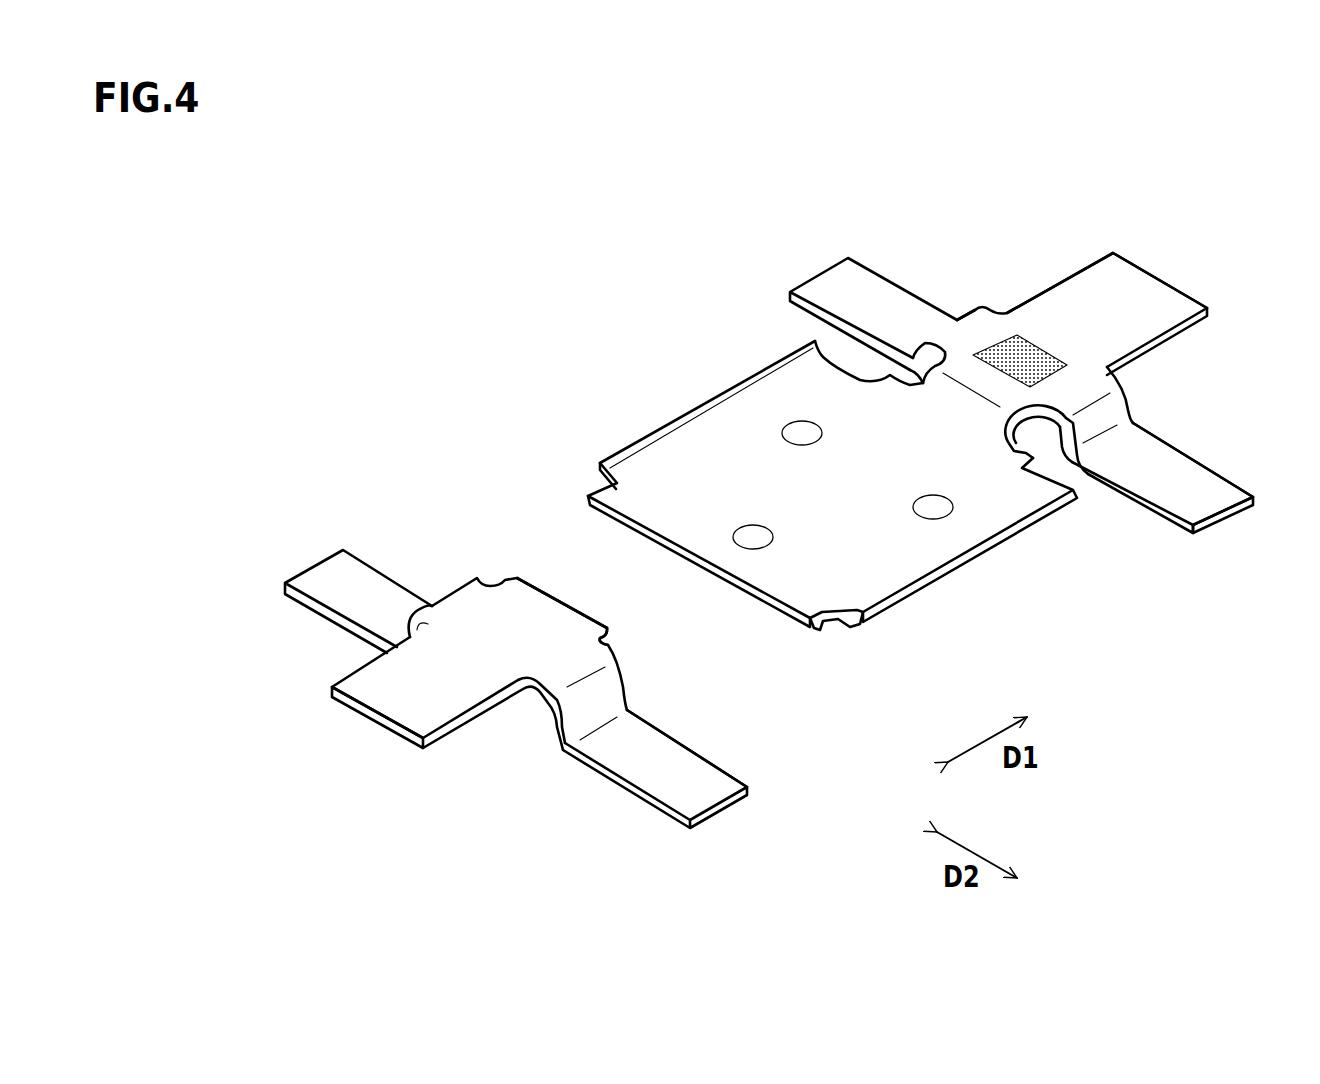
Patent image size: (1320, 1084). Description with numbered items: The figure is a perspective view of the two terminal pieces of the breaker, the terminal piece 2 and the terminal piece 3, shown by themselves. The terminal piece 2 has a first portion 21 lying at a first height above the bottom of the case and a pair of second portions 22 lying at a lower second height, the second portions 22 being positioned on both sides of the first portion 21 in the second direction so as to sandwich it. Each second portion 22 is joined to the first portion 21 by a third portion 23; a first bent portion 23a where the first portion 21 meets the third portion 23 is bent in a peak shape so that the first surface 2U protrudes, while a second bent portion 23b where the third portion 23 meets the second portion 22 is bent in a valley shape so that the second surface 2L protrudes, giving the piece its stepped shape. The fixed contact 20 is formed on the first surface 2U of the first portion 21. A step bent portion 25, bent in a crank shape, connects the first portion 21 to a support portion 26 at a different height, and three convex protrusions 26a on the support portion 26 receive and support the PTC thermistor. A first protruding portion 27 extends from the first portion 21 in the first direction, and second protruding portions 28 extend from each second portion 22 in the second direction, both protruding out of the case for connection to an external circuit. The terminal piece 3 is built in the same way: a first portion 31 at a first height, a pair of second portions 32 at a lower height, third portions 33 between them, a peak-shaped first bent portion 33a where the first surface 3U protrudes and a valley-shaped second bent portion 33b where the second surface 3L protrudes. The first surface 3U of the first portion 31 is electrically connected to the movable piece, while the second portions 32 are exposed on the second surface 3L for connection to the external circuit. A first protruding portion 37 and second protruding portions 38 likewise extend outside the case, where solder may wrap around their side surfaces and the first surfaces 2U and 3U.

The terminal piece 2 is at (1207, 270).
The first surface 2U is at (1035, 333).
The second surface 2L is at (1160, 490).
The fixed contact 20 is at (1017, 350).
The first portion 21 is at (1073, 383).
The second portions 22 is at (885, 318).
The third portions 23 is at (1110, 407).
The first bent portion 23a is at (1107, 373).
The second bent portion 23b is at (1105, 440).
The step bent portion 25 is at (960, 402).
The support portion 26 is at (800, 497).
The protrusions 26a is at (935, 505).
The first protruding portion 27 is at (1075, 287).
The second protruding portions 28 is at (847, 270).
The terminal piece 3 is at (482, 742).
The first surface 3U is at (540, 625).
The second surface 3L is at (608, 757).
The first portion 31 is at (520, 625).
The second portions 32 is at (383, 612).
The third portions 33 is at (603, 700).
The first bent portion 33a is at (583, 678).
The second bent portion 33b is at (605, 730).
The first protruding portion 37 is at (415, 693).
The second protruding portions 38 is at (340, 562).